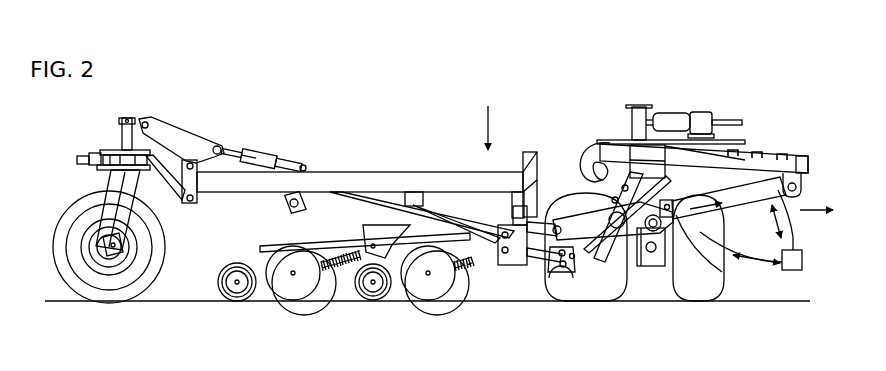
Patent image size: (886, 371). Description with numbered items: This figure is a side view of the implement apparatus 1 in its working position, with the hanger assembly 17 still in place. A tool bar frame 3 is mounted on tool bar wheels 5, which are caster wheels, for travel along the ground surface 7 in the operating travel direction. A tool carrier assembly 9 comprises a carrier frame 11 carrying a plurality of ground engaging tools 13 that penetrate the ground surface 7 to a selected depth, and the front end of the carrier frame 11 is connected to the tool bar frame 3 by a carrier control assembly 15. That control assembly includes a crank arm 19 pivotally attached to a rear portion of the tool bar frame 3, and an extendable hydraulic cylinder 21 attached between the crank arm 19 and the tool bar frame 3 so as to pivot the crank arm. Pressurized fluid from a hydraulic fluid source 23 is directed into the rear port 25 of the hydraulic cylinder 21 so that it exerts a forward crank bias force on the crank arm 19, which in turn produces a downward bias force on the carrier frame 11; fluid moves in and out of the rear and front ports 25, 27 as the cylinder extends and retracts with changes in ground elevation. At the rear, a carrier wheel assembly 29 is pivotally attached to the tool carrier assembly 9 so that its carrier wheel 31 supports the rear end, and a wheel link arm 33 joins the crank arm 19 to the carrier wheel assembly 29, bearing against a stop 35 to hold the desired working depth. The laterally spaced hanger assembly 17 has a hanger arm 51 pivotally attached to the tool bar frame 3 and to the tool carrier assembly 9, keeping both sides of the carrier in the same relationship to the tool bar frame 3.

The implement apparatus 1 is at (630, 63).
The tool bar frame 3 is at (771, 157).
The tool bar wheels 5 is at (548, 285).
The ground surface 7 is at (60, 301).
The tool carrier assembly 9 is at (527, 118).
The carrier frame 11 is at (458, 171).
The ground engaging tools 13 is at (266, 254).
The carrier control assembly 15 is at (571, 182).
The hanger assembly 17 is at (582, 232).
The crank arm 19 is at (623, 233).
The hydraulic cylinder 21 is at (741, 205).
The hydraulic fluid source 23 is at (804, 260).
The rear port 25 is at (718, 288).
The front port 27 is at (796, 190).
The carrier wheel assembly 29 is at (97, 130).
The carrier wheel 31 is at (72, 203).
The wheel link arm 33 is at (364, 204).
The stop 35 is at (317, 169).
The hanger arm 51 is at (603, 228).